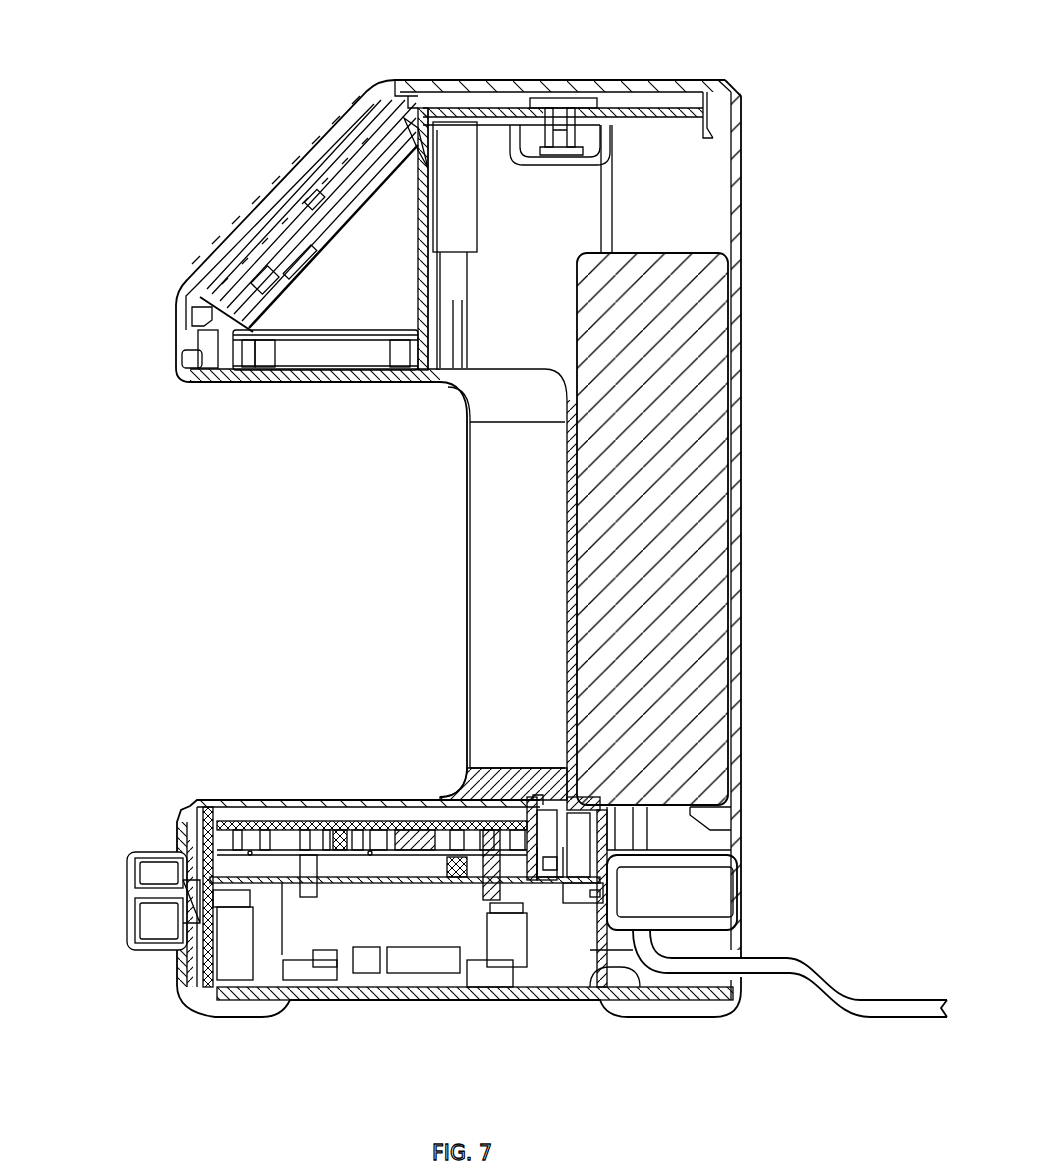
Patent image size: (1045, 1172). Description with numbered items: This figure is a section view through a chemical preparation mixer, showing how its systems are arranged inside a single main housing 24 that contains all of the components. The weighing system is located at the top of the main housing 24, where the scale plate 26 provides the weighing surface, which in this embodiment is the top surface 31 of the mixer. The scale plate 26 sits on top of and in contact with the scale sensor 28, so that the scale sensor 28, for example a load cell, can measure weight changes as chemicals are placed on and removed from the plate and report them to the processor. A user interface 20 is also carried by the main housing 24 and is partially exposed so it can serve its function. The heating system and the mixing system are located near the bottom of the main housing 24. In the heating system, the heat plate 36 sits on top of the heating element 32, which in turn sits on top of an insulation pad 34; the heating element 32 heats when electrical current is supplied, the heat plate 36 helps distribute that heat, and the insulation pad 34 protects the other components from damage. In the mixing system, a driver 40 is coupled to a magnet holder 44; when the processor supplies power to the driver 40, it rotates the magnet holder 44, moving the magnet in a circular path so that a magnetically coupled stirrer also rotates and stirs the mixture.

The user interface 20 is at (287, 177).
The main housing 24 is at (510, 572).
The scale plate 26 is at (690, 80).
The scale sensor 28 is at (583, 128).
The top surface 31 is at (470, 80).
The heating element 32 is at (217, 803).
The insulation pad 34 is at (175, 833).
The heat plate 36 is at (250, 817).
The driver 40 is at (337, 880).
The magnet holder 44 is at (405, 833).